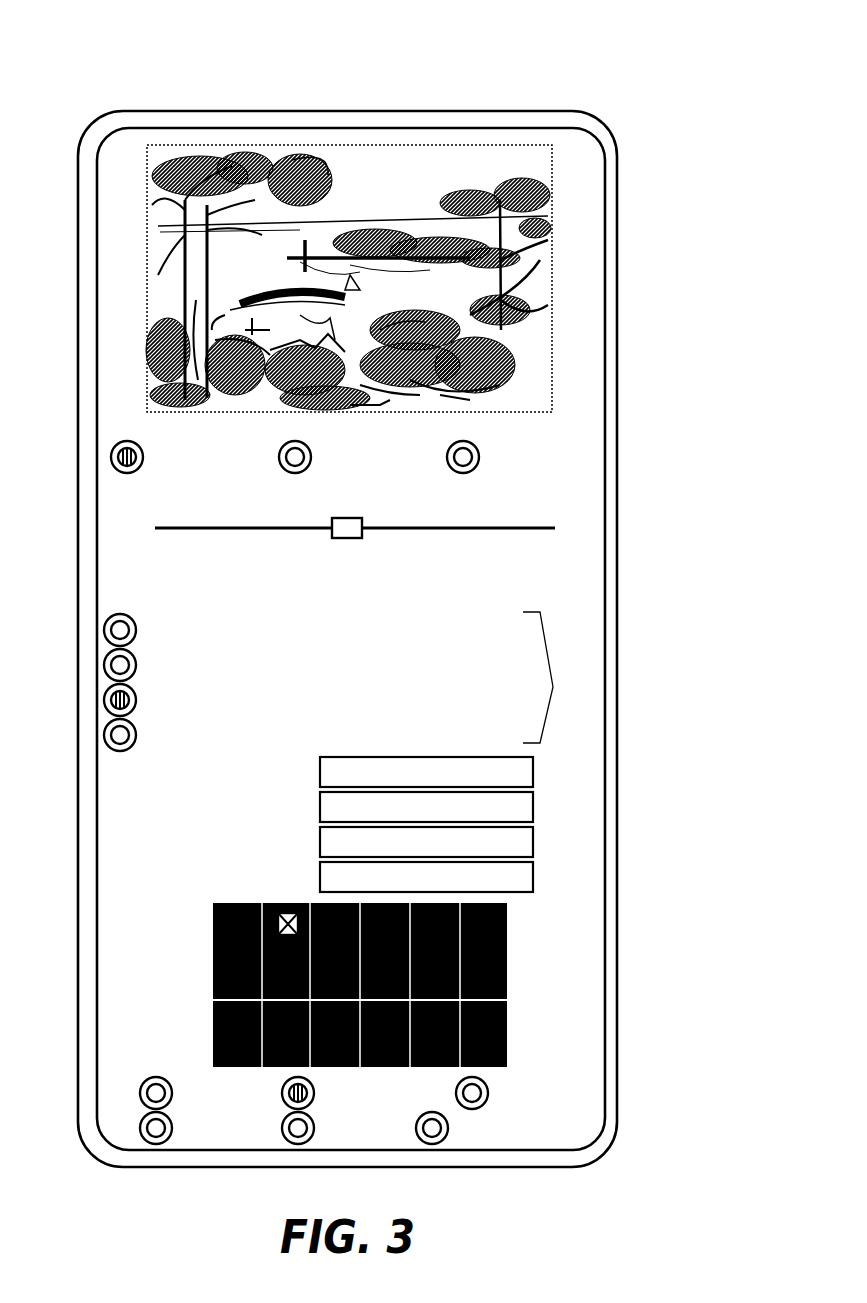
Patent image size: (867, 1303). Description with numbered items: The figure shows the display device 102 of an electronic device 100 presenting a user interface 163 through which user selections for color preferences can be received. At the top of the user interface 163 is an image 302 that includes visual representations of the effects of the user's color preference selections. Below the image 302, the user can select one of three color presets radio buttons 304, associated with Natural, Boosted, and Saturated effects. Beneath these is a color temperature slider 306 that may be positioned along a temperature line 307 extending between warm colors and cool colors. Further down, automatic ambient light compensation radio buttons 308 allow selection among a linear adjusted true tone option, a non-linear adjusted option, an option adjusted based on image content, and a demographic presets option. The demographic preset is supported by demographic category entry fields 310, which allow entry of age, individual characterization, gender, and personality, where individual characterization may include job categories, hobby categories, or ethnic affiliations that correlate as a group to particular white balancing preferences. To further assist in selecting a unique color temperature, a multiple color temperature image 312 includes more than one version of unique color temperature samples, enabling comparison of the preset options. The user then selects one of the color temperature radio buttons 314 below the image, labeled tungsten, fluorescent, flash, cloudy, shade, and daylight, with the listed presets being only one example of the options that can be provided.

The electronic device 100 is at (68, 108).
The display device 102 is at (200, 128).
The user interface 163 is at (123, 182).
The image 302 is at (552, 200).
The color presets radio buttons 304 is at (557, 473).
The color temperature slider 306 is at (352, 518).
The temperature line 307 is at (538, 538).
The automatic ambient light compensation radio buttons 308 is at (556, 686).
The demographic category entry fields 310 is at (560, 822).
The multiple color temperature image 312 is at (507, 1008).
The color temperature radio buttons 314 is at (545, 1132).